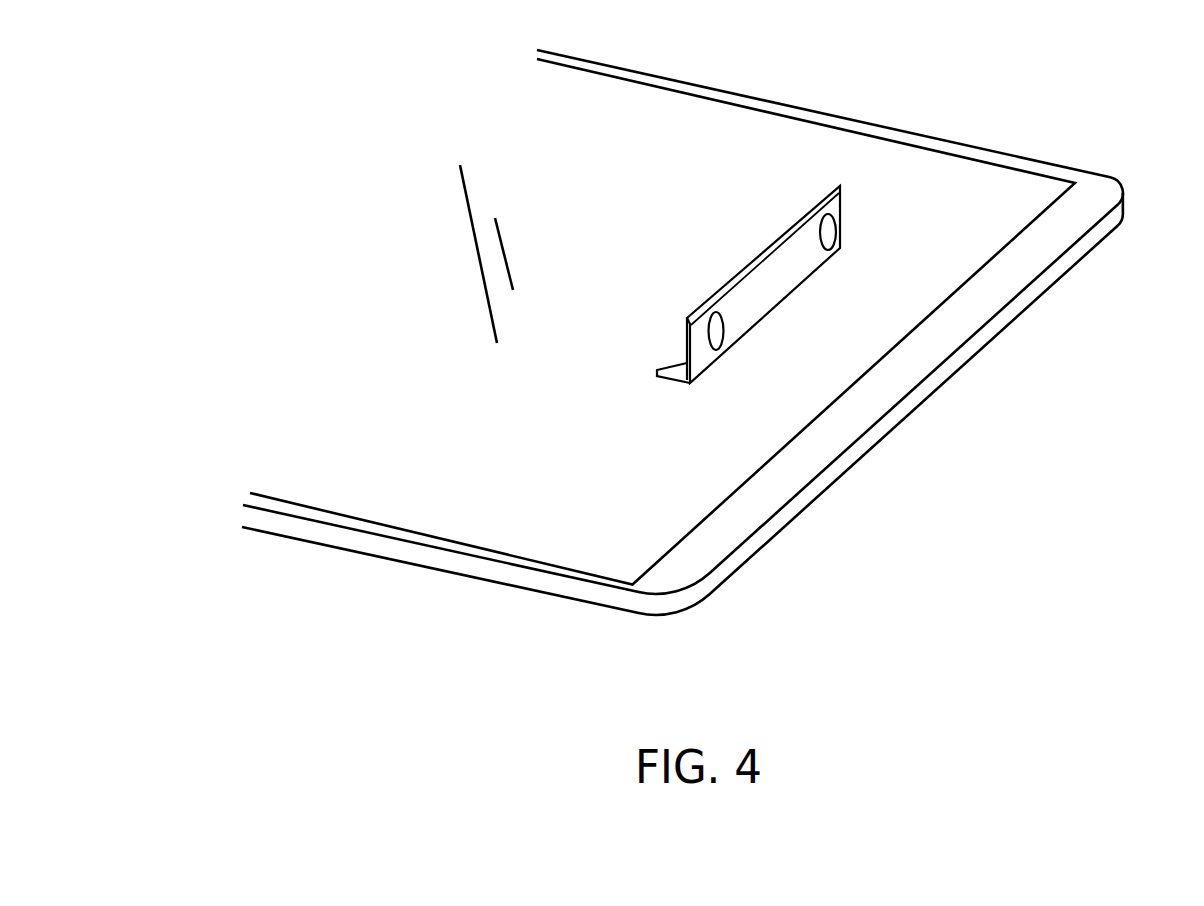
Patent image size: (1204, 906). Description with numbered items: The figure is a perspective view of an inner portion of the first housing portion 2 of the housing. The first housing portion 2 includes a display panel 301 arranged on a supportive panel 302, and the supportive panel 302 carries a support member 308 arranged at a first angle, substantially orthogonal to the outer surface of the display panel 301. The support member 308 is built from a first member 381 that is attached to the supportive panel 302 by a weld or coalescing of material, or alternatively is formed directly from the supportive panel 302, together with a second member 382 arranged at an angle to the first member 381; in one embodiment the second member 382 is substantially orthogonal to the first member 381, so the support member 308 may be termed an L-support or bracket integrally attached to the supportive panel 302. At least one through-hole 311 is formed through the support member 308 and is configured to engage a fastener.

The first housing portion 2 is at (712, 332).
The display panel 301 is at (1052, 265).
The supportive panel 302 is at (947, 228).
The support member 308 is at (761, 271).
The through-hole 311 is at (725, 323).
The first member 381 is at (673, 369).
The second member 382 is at (686, 327).